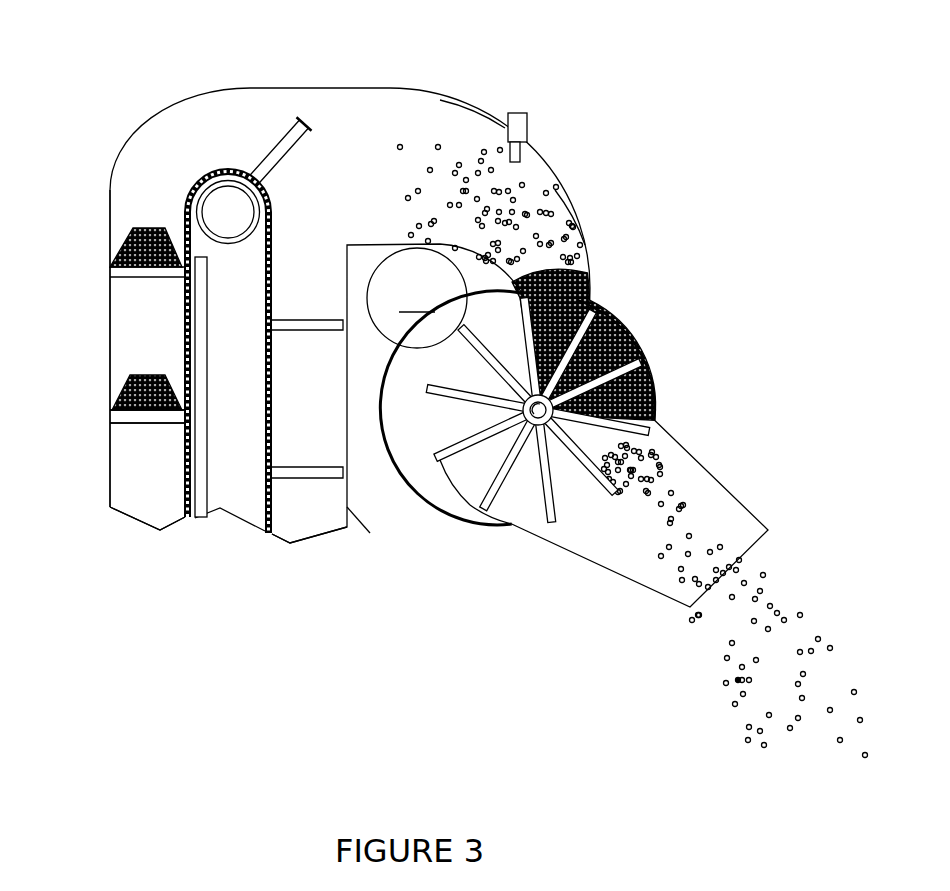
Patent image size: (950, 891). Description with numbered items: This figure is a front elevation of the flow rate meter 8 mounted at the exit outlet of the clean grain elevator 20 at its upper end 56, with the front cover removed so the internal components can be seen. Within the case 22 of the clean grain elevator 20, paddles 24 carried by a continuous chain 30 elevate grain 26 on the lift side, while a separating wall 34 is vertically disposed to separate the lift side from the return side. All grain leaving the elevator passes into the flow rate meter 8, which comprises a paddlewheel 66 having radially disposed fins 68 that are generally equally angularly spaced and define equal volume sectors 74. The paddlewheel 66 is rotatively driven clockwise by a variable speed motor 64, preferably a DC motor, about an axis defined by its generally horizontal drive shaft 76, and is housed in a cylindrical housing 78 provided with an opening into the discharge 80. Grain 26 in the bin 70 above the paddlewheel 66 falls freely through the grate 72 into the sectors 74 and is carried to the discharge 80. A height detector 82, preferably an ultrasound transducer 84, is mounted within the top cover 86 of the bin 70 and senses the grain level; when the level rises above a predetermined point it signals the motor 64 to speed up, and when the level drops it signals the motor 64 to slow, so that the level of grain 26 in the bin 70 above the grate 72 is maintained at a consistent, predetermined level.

The flow rate meter 8 is at (569, 464).
The clean grain elevator 20 is at (370, 533).
The case 22 is at (110, 312).
The paddles 24 is at (277, 148).
The grain 26 is at (588, 265).
The continuous chain 30 is at (268, 205).
The separating wall 34 is at (202, 300).
The upper end 56 is at (253, 88).
The variable speed motor 64 is at (417, 298).
The paddlewheel 66 is at (657, 418).
The fins 68 is at (467, 343).
The bin 70 is at (573, 217).
The grate 72 is at (590, 300).
The equal volume sectors 74 is at (657, 390).
The drive shaft 76 is at (460, 493).
The cylindrical housing 78 is at (477, 510).
The discharge 80 is at (743, 513).
The height detector 82 is at (520, 120).
The ultrasound transducer 84 is at (522, 150).
The top cover 86 is at (473, 110).